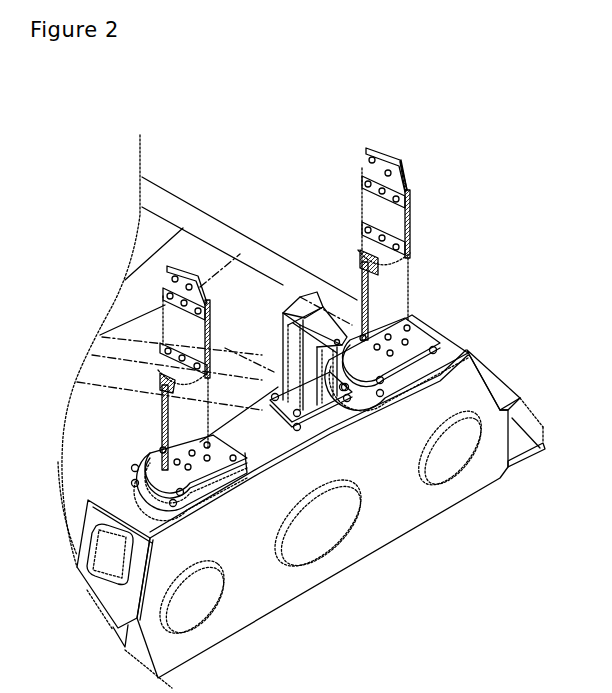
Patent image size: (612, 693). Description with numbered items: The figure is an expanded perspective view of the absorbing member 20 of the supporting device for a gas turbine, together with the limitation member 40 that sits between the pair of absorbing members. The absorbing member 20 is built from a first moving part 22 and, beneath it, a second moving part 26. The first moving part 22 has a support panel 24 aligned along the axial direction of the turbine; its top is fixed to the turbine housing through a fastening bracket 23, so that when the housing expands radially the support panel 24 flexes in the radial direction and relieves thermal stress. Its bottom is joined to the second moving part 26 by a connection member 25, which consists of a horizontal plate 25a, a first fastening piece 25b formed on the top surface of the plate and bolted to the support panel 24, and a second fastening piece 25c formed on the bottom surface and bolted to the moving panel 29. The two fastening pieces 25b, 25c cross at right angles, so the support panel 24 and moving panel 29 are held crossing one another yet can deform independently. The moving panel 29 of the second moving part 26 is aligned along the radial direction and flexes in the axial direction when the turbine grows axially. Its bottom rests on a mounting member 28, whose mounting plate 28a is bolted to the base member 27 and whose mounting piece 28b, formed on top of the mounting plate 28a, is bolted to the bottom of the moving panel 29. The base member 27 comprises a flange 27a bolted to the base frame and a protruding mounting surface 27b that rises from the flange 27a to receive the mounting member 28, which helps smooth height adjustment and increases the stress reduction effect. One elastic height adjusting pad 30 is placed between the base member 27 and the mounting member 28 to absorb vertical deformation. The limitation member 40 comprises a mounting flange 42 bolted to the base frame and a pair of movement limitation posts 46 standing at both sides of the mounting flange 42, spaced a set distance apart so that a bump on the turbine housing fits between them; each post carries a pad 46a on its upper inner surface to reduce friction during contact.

The absorbing member 20 is at (335, 138).
The first moving part 22 is at (451, 276).
The fastening bracket 23 is at (393, 162).
The support panel 24 is at (410, 217).
The connection member 25 is at (445, 255).
The horizontal plate 25a is at (410, 253).
The first fastening piece 25b is at (410, 237).
The second fastening piece 25c is at (378, 270).
The second moving part 26 is at (345, 273).
The base member 27 is at (325, 514).
The flange 27a is at (412, 390).
The protruding mounting surface 27b is at (540, 452).
The mounting member 28 is at (455, 363).
The mounting plate 28a is at (468, 352).
The mounting piece 28b is at (400, 320).
The moving panel 29 is at (410, 290).
The height adjusting pad 30 is at (522, 398).
The limitation member 40 is at (228, 411).
The mounting flange 42 is at (313, 405).
The movement limitation posts 46 is at (206, 318).
The pad 46a is at (270, 367).